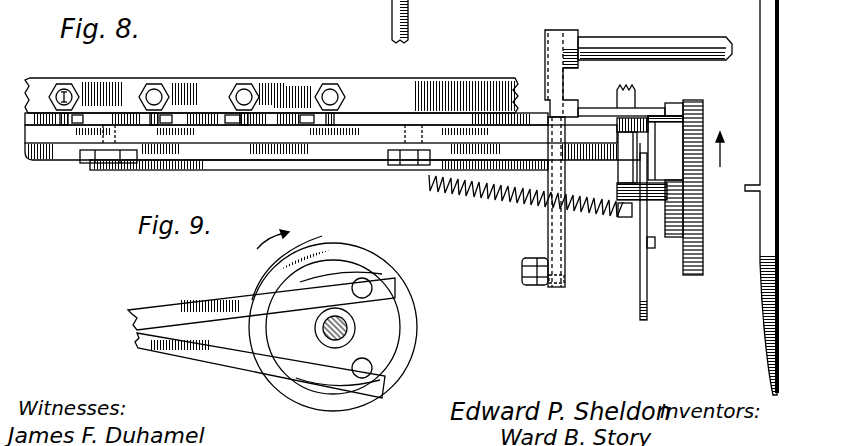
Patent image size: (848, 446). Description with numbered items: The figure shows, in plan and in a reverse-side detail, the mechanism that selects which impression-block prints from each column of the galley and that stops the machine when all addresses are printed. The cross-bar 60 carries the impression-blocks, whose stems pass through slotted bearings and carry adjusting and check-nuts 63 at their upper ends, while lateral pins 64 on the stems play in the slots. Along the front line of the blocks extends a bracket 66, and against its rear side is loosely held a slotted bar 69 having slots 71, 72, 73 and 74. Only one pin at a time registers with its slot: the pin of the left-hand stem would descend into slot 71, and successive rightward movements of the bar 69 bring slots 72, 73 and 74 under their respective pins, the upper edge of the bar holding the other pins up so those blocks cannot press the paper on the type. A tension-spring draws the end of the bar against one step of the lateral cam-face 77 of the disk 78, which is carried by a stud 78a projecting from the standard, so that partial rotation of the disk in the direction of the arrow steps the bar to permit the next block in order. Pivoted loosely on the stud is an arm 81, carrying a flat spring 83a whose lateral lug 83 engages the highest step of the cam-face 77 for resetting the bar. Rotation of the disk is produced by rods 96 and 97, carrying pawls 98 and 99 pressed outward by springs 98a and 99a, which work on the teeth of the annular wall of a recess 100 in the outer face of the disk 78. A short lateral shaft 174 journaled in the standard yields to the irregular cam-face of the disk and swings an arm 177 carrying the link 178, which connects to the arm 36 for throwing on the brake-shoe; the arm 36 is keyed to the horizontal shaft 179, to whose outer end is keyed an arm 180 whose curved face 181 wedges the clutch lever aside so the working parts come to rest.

In FIG. 8, the arm 36 is at (559, 87).
In FIG. 8, the cross-bar 60 is at (366, 84).
In FIG. 8, the adjusting and check-nuts 63 is at (152, 91).
In FIG. 8, the lateral pins 64 is at (64, 129).
In FIG. 8, the bracket 66 is at (383, 170).
In FIG. 8, the slotted bar 69 is at (523, 121).
In FIG. 8, the slot 71 is at (72, 124).
In FIG. 8, the slot 72 is at (148, 128).
In FIG. 8, the slot 73 is at (222, 116).
In FIG. 8, the slot 74 is at (308, 162).
In FIG. 8, the lateral cam-face 77 is at (672, 128).
In FIG. 8, the disk 78 is at (704, 203).
In FIG. 9, the disk 78 is at (356, 262).
In FIG. 9, the stud 78a is at (366, 343).
In FIG. 8, the arm 81 is at (647, 312).
In FIG. 8, the lateral lug 83 is at (650, 248).
In FIG. 8, the flat spring 83a is at (640, 293).
In FIG. 9, the rod 96 is at (196, 305).
In FIG. 9, the rod 97 is at (206, 350).
In FIG. 9, the pawl 98 is at (376, 296).
In FIG. 9, the spring 98a is at (384, 303).
In FIG. 9, the pawl 99 is at (360, 388).
In FIG. 9, the spring 99a is at (330, 393).
In FIG. 9, the recess 100 is at (386, 341).
In FIG. 8, the short lateral shaft 174 is at (648, 107).
In FIG. 8, the arm 177 is at (562, 240).
In FIG. 8, the link 178 is at (536, 258).
In FIG. 8, the horizontal shaft 179 is at (647, 41).
In FIG. 8, the arm 180 is at (760, 23).
In FIG. 8, the curved face 181 is at (760, 338).